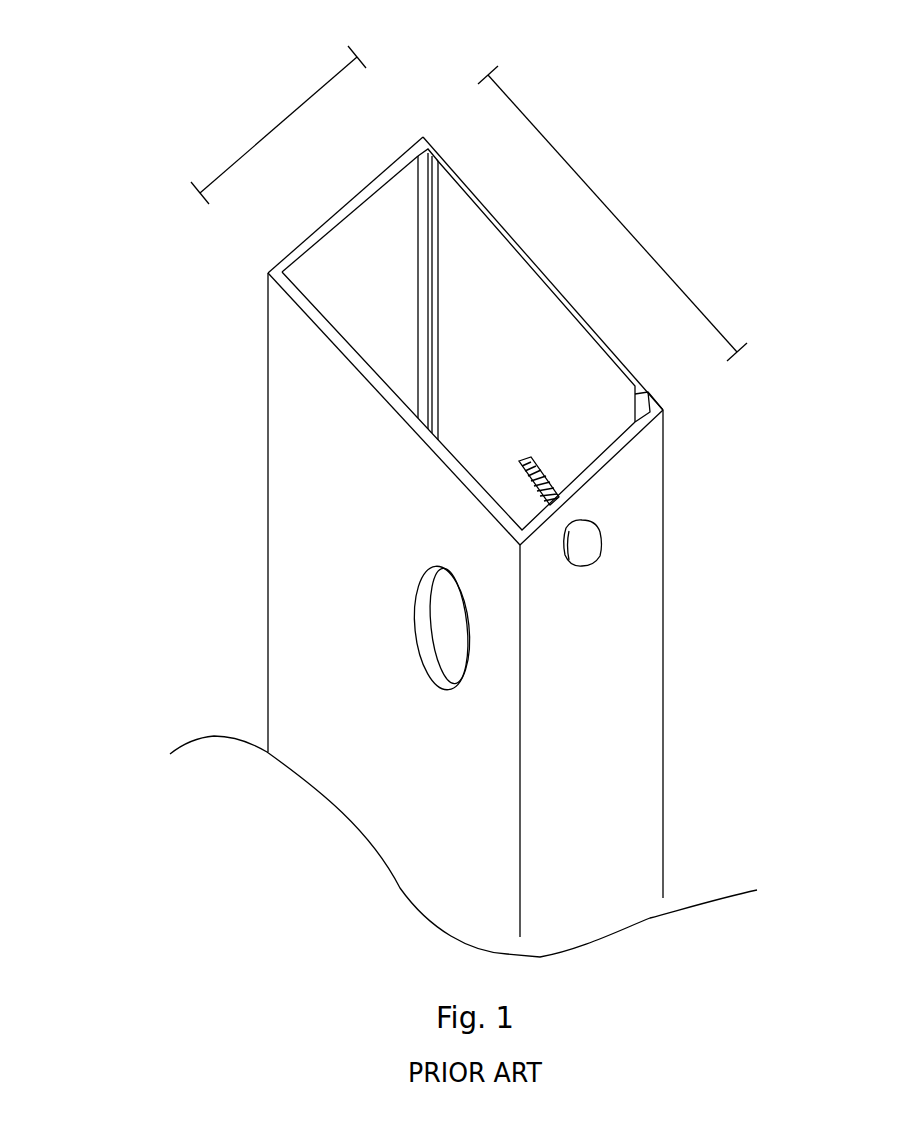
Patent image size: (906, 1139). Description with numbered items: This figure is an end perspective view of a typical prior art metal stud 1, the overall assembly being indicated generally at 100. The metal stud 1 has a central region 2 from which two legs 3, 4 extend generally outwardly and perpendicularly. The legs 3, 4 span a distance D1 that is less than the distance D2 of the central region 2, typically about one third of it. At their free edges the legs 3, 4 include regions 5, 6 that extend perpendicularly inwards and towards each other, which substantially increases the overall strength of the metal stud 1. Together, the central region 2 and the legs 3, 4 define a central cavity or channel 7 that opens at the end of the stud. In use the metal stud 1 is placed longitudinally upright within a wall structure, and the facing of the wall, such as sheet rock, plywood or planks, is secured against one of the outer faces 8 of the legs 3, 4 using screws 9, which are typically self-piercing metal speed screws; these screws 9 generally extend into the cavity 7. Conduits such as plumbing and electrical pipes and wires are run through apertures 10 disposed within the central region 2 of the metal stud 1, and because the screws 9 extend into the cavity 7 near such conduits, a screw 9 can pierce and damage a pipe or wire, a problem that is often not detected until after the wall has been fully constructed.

The prior art post assembly 100 is at (135, 78).
The metal stud 1 is at (666, 158).
The central region 2 is at (460, 452).
The leg 3 is at (353, 196).
The leg 4 is at (327, 313).
The region 5 is at (430, 150).
The region 6 is at (650, 390).
The central cavity or channel 7 is at (468, 344).
The outer face 8 is at (594, 599).
The screw 9 is at (543, 473).
The aperture 10 is at (414, 606).
The distance D1 is at (268, 133).
The distance D2 is at (633, 237).